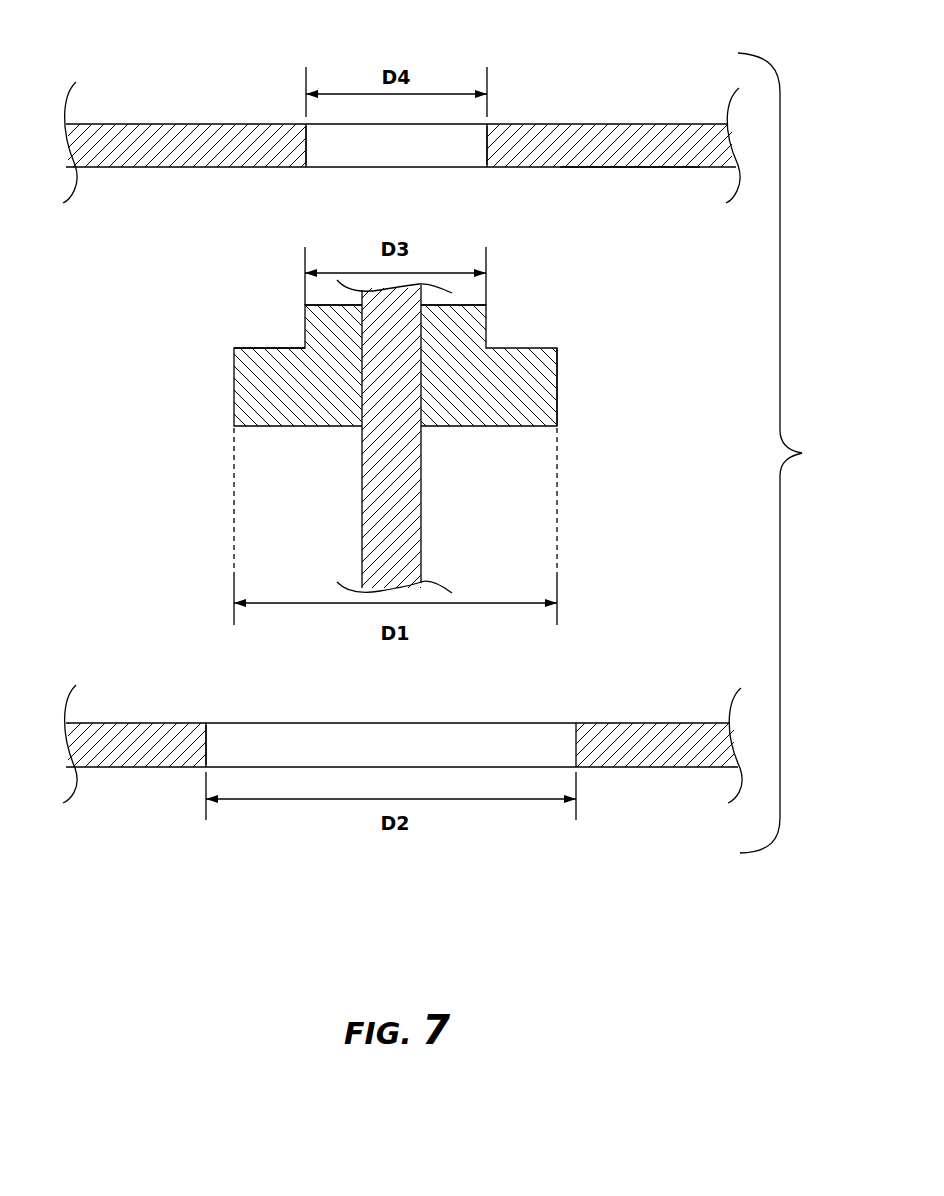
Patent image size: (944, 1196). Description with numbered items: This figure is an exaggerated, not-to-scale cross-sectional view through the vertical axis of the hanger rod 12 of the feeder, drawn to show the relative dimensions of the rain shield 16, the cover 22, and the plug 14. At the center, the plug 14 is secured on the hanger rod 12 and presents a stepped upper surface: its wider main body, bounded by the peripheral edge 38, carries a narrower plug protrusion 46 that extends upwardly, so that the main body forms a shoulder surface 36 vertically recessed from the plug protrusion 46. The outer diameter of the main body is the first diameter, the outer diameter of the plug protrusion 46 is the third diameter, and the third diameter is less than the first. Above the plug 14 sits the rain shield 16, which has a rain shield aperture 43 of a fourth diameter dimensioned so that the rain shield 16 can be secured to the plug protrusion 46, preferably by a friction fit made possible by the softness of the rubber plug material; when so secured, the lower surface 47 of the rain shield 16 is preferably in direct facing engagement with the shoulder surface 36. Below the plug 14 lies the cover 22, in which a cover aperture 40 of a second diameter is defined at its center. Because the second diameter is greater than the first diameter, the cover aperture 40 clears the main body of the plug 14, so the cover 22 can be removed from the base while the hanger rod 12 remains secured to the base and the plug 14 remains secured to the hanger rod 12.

The hanger rod 12 is at (421, 505).
The plug 14 is at (529, 338).
The rain shield 16 is at (631, 113).
The cover 22 is at (632, 713).
The shoulder surface 36 is at (250, 348).
The peripheral edge 38 is at (557, 396).
The cover aperture 40 is at (207, 735).
The rain shield aperture 43 is at (487, 154).
The plug protrusion 46 is at (326, 305).
The lower surface 47 is at (625, 167).